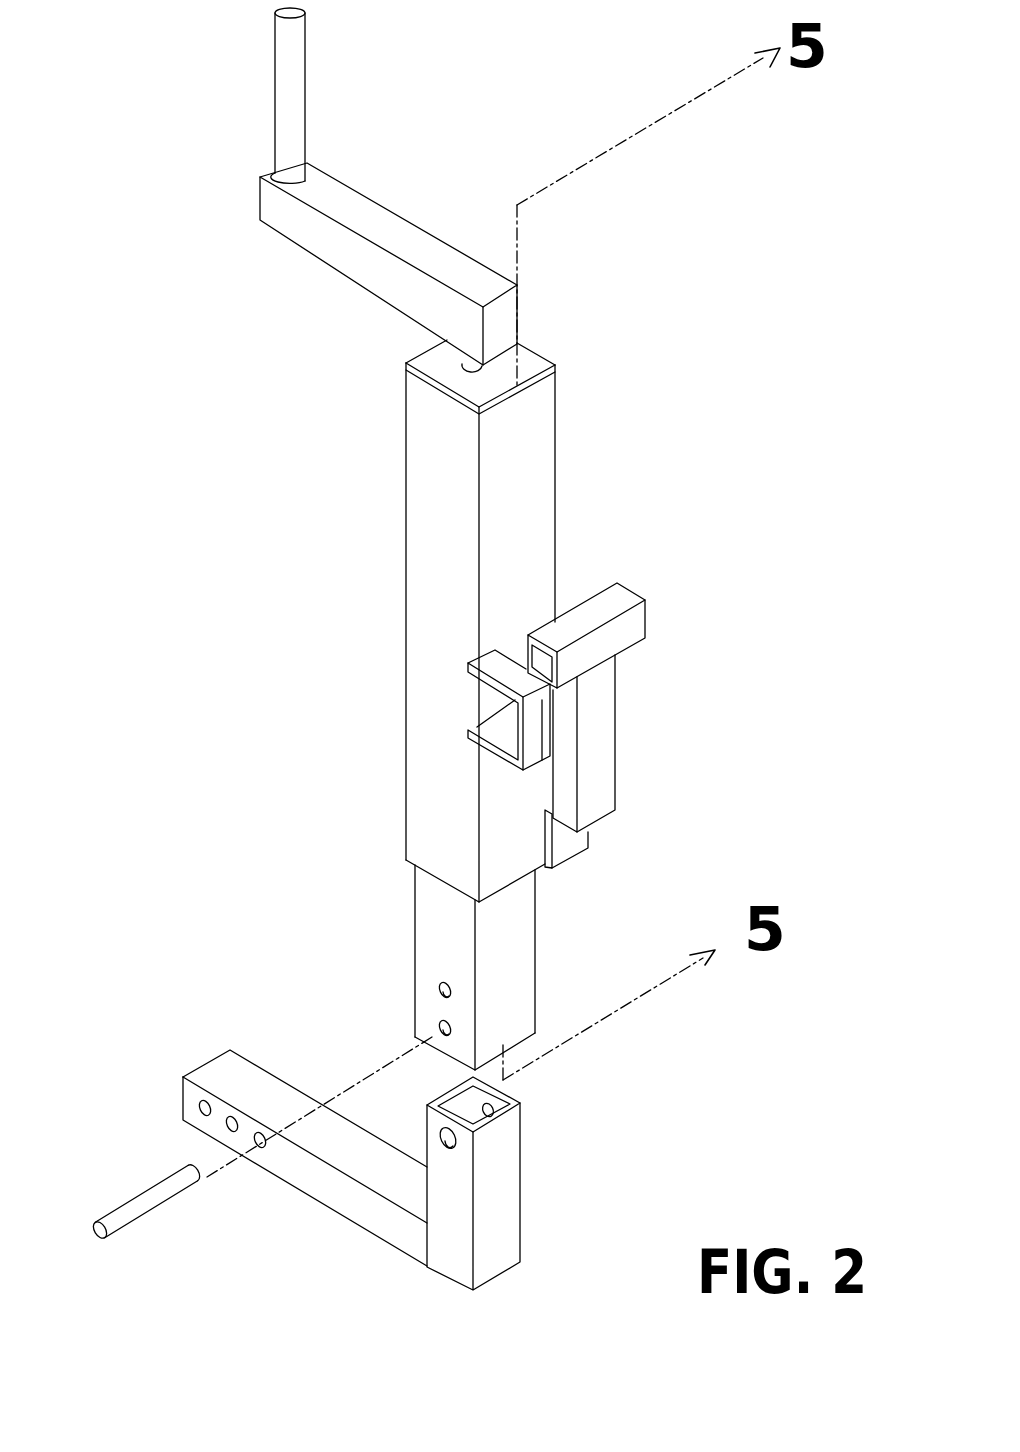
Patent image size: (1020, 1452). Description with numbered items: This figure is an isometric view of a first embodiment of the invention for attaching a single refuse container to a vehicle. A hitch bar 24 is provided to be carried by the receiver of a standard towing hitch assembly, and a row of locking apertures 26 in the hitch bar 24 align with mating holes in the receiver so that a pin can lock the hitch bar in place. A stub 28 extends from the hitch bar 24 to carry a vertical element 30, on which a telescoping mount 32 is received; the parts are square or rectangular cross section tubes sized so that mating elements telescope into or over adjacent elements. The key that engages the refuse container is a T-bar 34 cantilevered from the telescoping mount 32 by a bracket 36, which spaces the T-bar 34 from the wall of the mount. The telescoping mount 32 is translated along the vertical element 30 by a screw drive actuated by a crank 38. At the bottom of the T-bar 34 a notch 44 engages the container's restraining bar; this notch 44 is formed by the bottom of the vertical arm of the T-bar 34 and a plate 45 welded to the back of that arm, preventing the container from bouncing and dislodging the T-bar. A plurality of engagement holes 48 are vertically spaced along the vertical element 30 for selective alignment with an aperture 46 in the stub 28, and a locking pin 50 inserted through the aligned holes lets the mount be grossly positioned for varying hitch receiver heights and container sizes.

The hitch bar 24 is at (233, 1120).
The locking apertures 26 is at (400, 1222).
The stub 28 is at (502, 1218).
The vertical element 30 is at (425, 883).
The telescoping mount 32 is at (445, 542).
The T-bar 34 is at (603, 645).
The bracket 36 is at (502, 675).
The crank 38 is at (333, 197).
The notch 44 is at (608, 815).
The plate 45 is at (562, 840).
The aperture 46 is at (453, 1140).
The engagement holes 48 is at (440, 985).
The locking pin 50 is at (145, 1203).